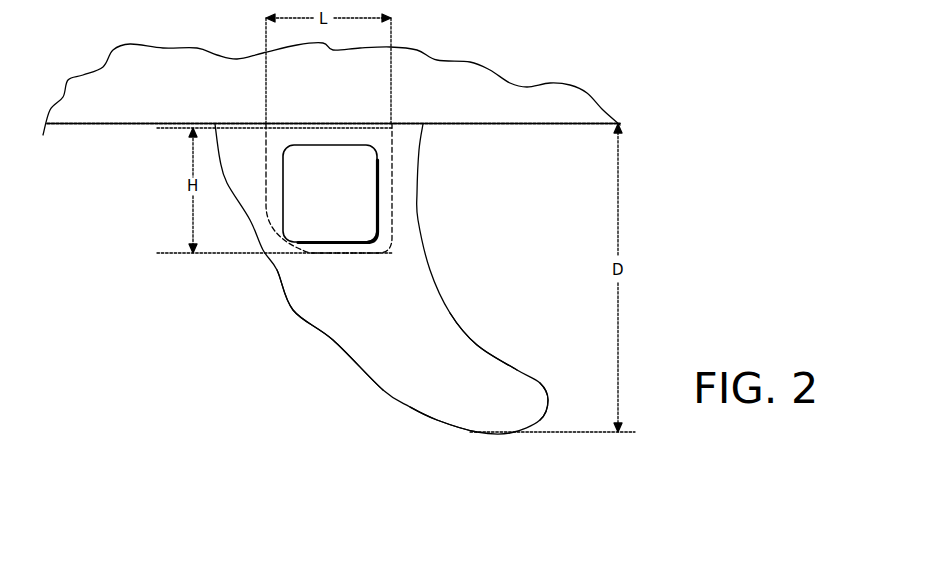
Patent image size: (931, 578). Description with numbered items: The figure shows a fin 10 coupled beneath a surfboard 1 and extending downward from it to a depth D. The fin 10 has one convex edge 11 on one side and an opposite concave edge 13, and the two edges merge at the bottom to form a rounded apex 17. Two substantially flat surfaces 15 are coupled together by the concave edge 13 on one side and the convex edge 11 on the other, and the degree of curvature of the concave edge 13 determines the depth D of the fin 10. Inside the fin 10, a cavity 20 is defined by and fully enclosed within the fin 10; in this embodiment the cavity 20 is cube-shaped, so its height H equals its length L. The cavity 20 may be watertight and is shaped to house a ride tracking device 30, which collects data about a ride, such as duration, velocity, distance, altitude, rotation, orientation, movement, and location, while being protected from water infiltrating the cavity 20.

The hull surface 1 is at (135, 110).
The fin 10 is at (477, 289).
The convex edge 11 is at (333, 338).
The concave edge 13 is at (477, 347).
The substantially flat surfaces 15 is at (441, 375).
The rounded apex 17 is at (555, 408).
The cavity 20 is at (380, 172).
The ride tracking device 30 is at (340, 198).